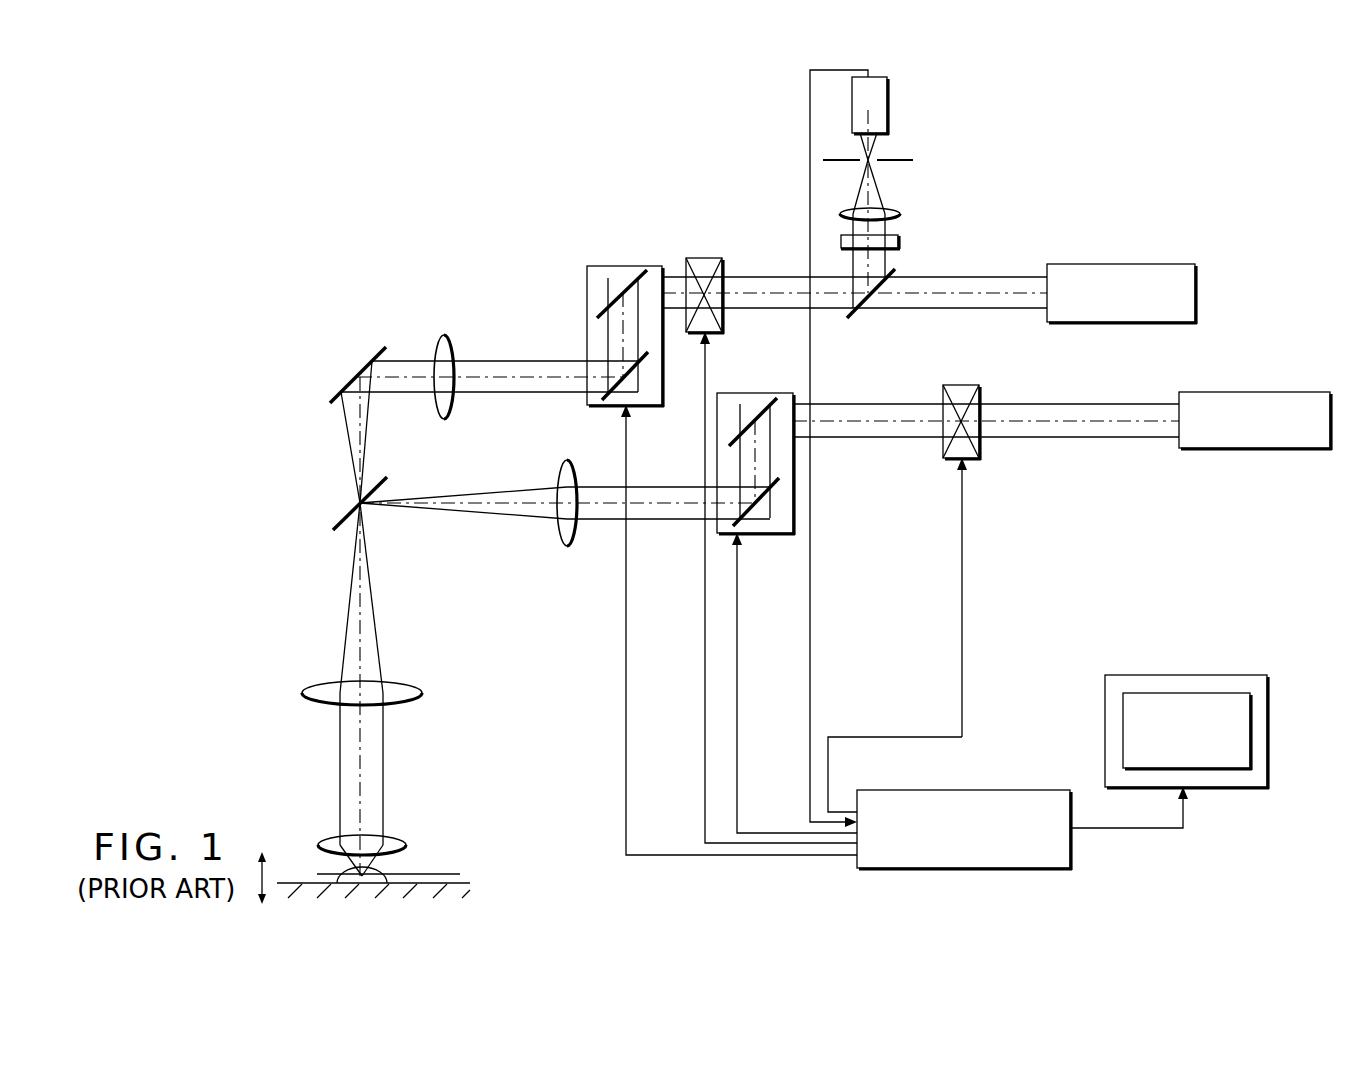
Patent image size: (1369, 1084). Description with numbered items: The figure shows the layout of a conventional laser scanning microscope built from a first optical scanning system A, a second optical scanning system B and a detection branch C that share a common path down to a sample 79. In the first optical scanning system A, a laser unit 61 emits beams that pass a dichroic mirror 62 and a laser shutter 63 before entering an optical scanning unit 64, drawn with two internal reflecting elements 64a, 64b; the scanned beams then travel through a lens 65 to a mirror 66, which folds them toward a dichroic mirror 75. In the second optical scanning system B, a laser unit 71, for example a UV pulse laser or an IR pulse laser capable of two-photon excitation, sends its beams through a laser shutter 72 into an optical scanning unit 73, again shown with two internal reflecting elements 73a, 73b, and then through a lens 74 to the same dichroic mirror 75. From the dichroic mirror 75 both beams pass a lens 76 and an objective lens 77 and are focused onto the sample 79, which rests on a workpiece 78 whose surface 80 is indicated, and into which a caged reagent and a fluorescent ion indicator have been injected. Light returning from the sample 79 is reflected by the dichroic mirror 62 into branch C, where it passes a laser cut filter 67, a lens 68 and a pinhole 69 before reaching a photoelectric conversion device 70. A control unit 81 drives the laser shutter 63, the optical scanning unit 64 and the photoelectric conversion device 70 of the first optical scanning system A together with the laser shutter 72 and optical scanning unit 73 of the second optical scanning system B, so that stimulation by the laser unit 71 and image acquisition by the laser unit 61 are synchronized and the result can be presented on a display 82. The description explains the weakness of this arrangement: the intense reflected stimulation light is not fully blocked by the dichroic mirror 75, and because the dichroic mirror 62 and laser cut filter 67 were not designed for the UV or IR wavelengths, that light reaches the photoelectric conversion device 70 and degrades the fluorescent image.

The laser unit 61 is at (1160, 264).
The dichroic mirror 62 is at (889, 279).
The laser shutter 63 is at (700, 258).
The optical scanning unit 64 is at (622, 266).
The mirror 64a is at (597, 300).
The mirror 64b is at (632, 376).
The lens 65 is at (448, 335).
The mirror 66 is at (352, 378).
The laser cut filter 67 is at (899, 242).
The condensing lens 68 is at (899, 215).
The pinhole 69 is at (895, 160).
The photoelectric conversion device 70 is at (889, 101).
The laser unit 71 is at (1267, 392).
The laser shutter 72 is at (968, 385).
The optical scanning unit 73 is at (792, 393).
The mirror 73a is at (737, 415).
The mirror 73b is at (760, 537).
The lens 74 is at (566, 547).
The dichroic mirror 75 is at (342, 517).
The lens 76 is at (322, 683).
The objective lens 77 is at (325, 840).
The workpiece 78 is at (340, 890).
The sample 79 is at (372, 890).
The workpiece surface 80 is at (432, 874).
The control unit 81 is at (1013, 790).
The display unit 82 is at (1210, 675).
The first optical scanning system A is at (1012, 227).
The second optical scanning system B is at (1090, 469).
The detection optical system C is at (1012, 120).